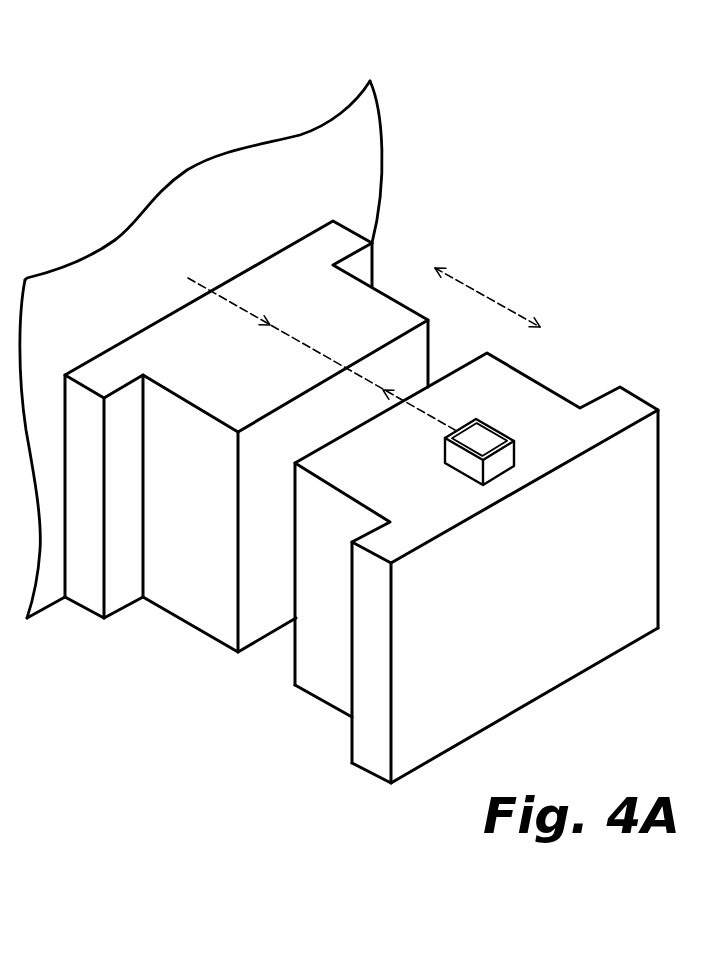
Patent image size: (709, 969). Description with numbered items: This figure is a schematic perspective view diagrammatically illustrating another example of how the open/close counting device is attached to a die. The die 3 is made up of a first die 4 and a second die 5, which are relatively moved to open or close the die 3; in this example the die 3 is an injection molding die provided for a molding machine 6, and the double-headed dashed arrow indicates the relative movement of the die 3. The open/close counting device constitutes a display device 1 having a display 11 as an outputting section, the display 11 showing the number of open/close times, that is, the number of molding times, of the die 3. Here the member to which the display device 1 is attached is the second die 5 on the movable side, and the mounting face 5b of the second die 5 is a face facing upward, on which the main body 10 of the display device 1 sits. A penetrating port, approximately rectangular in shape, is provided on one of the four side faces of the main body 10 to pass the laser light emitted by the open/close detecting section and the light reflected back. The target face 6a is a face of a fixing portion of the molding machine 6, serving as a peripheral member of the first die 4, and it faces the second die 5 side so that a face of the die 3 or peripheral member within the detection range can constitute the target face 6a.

The display device 1 is at (476, 460).
The die 3 is at (550, 248).
The first die 4 is at (170, 637).
The second die 5 is at (470, 568).
The mounting face 5b is at (448, 515).
The molding machine 6 is at (201, 349).
The target face 6a is at (275, 162).
The main body 10 is at (504, 460).
The display 11 is at (480, 437).